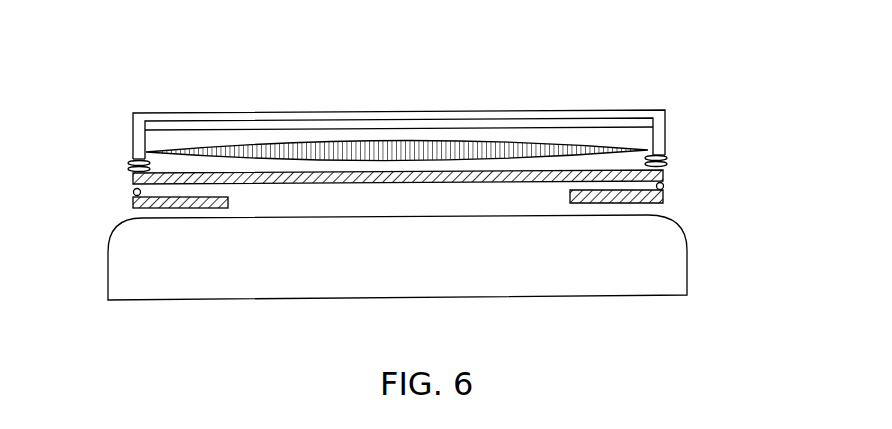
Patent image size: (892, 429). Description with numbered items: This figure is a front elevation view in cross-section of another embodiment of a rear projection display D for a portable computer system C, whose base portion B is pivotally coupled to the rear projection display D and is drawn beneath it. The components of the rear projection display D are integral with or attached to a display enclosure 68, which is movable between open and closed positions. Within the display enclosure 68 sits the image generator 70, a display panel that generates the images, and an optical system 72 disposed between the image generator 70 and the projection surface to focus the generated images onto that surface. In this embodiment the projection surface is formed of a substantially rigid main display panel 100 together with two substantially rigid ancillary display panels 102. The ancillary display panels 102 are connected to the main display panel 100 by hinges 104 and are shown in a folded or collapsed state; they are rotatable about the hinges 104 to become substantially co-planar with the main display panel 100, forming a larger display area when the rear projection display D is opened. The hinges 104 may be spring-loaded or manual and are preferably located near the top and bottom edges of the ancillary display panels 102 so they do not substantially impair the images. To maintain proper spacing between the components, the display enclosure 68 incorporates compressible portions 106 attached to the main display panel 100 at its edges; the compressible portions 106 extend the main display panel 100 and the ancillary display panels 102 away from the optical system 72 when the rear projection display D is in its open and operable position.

The base portion B is at (488, 278).
The portable computer system C is at (657, 81).
The rear projection display D is at (740, 105).
The display enclosure 68 is at (662, 119).
The image generator 70 is at (465, 120).
The optical system 72 is at (285, 148).
The main display panel 100 is at (189, 172).
The ancillary display panels 102 is at (133, 205).
The hinges 104 is at (133, 193).
The compressible portions 106 is at (128, 167).